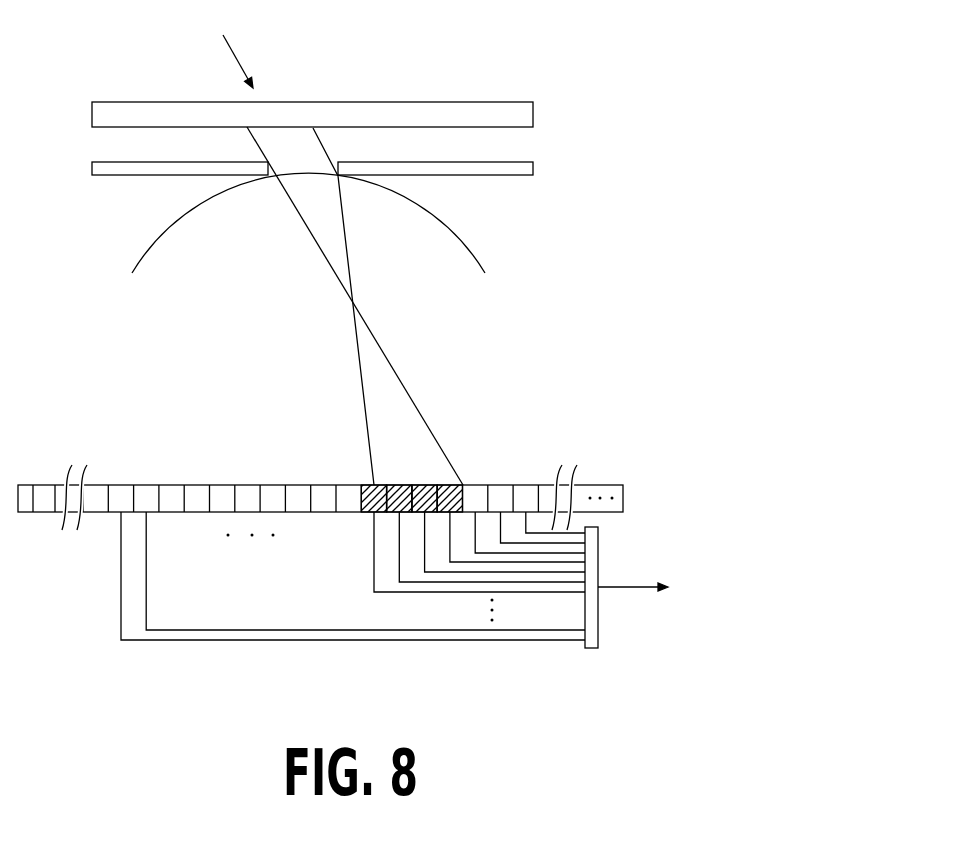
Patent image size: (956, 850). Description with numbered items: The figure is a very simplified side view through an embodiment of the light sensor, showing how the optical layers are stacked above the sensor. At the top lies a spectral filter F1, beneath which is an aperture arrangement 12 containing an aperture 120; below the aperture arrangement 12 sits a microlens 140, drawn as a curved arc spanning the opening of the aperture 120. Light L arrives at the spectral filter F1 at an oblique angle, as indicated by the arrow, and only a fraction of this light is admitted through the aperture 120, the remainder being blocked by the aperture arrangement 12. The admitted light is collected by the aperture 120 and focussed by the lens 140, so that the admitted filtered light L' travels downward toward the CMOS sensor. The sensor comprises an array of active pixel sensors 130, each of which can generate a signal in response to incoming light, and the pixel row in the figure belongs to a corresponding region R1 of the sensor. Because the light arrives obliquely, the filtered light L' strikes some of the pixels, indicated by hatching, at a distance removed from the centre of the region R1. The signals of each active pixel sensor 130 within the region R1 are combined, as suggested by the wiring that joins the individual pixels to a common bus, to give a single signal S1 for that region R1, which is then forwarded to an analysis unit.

The light L is at (263, 50).
The aperture 120 is at (305, 167).
The spectral filter F1 is at (515, 102).
The aperture arrangement 12 is at (517, 167).
The microlens 140 is at (480, 260).
The admitted filtered light L' is at (358, 306).
The region R1 is at (530, 485).
The active pixel sensor 130 is at (98, 503).
The signal S1 is at (633, 590).